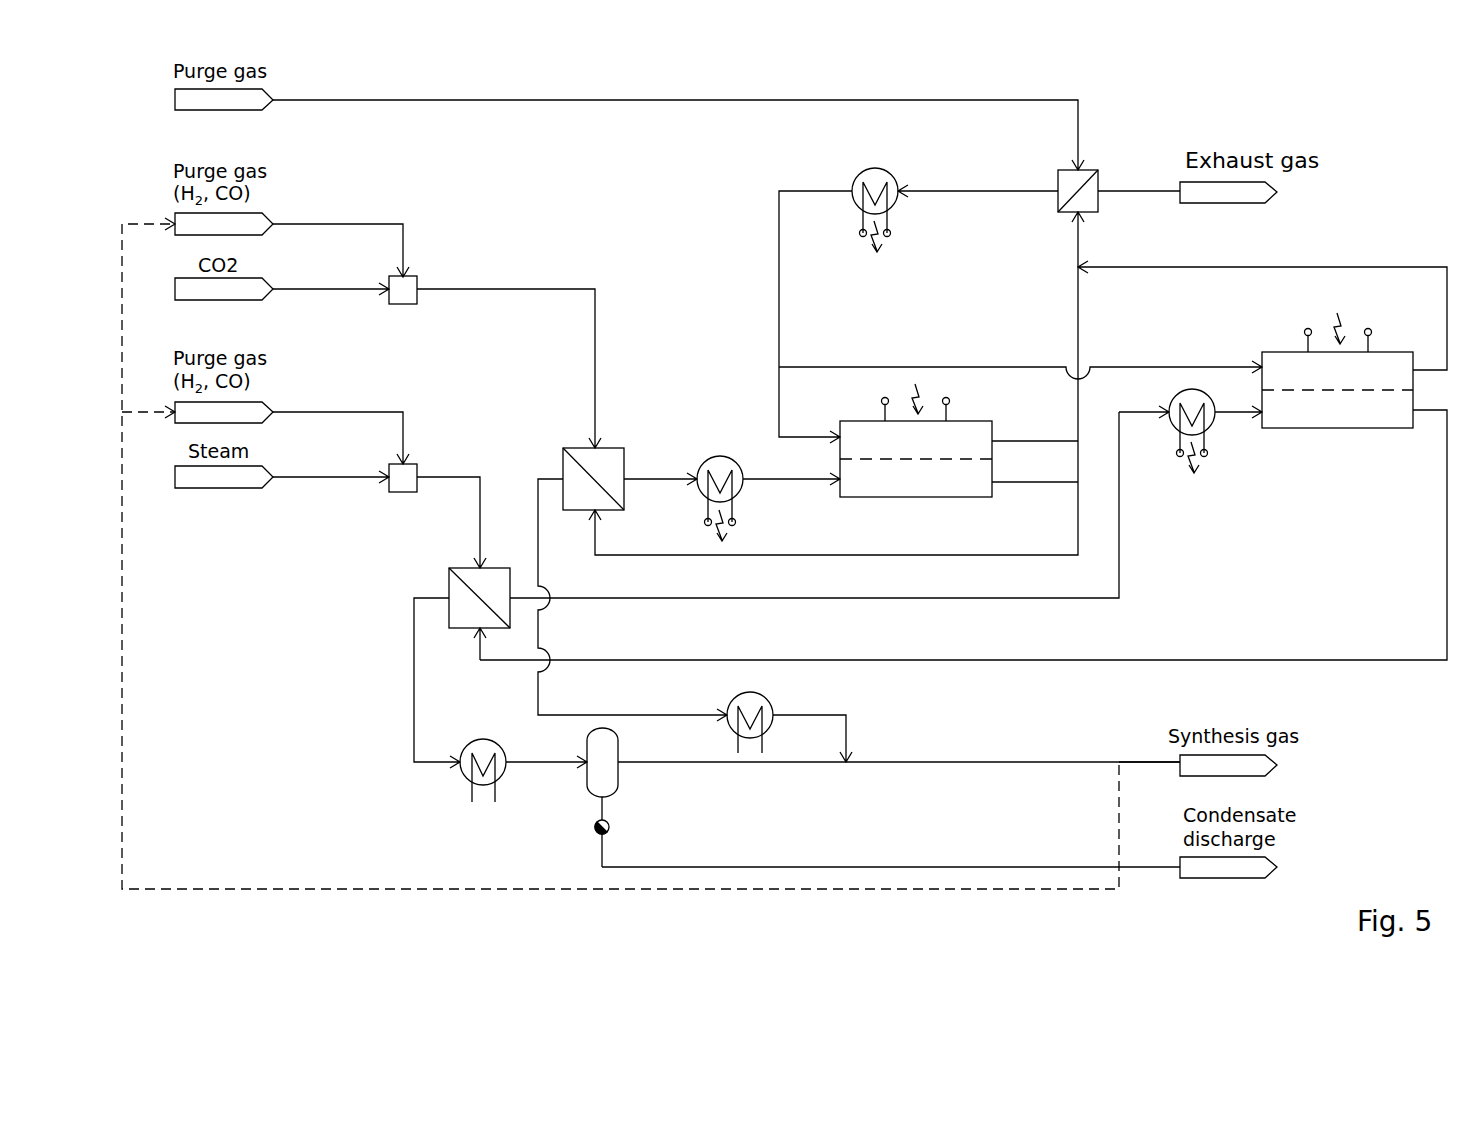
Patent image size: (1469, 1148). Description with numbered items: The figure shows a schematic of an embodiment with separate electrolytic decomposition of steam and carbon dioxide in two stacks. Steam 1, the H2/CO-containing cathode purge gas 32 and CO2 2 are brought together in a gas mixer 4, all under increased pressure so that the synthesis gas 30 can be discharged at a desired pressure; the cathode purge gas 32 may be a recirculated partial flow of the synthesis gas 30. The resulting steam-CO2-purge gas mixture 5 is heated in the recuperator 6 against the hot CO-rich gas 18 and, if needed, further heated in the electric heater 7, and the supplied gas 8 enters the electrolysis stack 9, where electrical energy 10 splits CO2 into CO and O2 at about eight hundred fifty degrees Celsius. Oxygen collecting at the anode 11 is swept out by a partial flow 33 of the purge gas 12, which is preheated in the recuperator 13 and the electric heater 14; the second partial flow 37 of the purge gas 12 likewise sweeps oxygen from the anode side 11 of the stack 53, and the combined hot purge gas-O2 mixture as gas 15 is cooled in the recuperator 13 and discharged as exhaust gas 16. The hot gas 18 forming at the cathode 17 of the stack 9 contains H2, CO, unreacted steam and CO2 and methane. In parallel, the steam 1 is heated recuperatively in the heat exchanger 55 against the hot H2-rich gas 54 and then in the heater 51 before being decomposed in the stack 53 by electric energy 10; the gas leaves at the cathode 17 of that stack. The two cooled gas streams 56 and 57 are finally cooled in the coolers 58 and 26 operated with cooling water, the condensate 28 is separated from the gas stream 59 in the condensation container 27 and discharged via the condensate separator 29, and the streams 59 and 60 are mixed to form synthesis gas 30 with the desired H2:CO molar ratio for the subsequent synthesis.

The steam 1 is at (331, 469).
The CO2 2 is at (331, 282).
The gas mixer 4 is at (410, 393).
The steam-CO2-purge gas mixture 5 is at (509, 418).
The recuperator 6 is at (597, 469).
The electric heater 7 is at (683, 479).
The supplied gas 8 is at (791, 491).
The electrolysis stack 9 is at (916, 464).
The electrical energy 10 is at (1043, 382).
The anode 11 is at (1208, 356).
The purge gas 12 is at (678, 123).
The recuperator 13 is at (1069, 182).
The electric heater 14 is at (955, 191).
The gas 15 is at (1069, 347).
The exhaust gas 16 is at (1139, 179).
The cathode 17 is at (963, 532).
The hot gas 18 is at (833, 518).
The cooler 26 is at (483, 760).
The condensation container 27 is at (574, 763).
The condensate 28 is at (891, 857).
The condensate separator 29 is at (616, 832).
The synthesis gas 30 is at (1149, 752).
The cathode purge gas 32 is at (341, 333).
The partial flow of purge gas 33 is at (815, 317).
The second partial flow of purge gas 37 is at (1020, 363).
The heater 51 is at (1190, 423).
The stack 53 is at (1337, 395).
The hot H2-rich gas 54 is at (956, 557).
The heat exchanger 55 is at (784, 520).
The cooled gas stream 56 is at (632, 600).
The cooled gas stream 57 is at (437, 683).
The cooler 58 is at (750, 711).
The gas stream 59 is at (899, 774).
The stream 60 is at (824, 738).